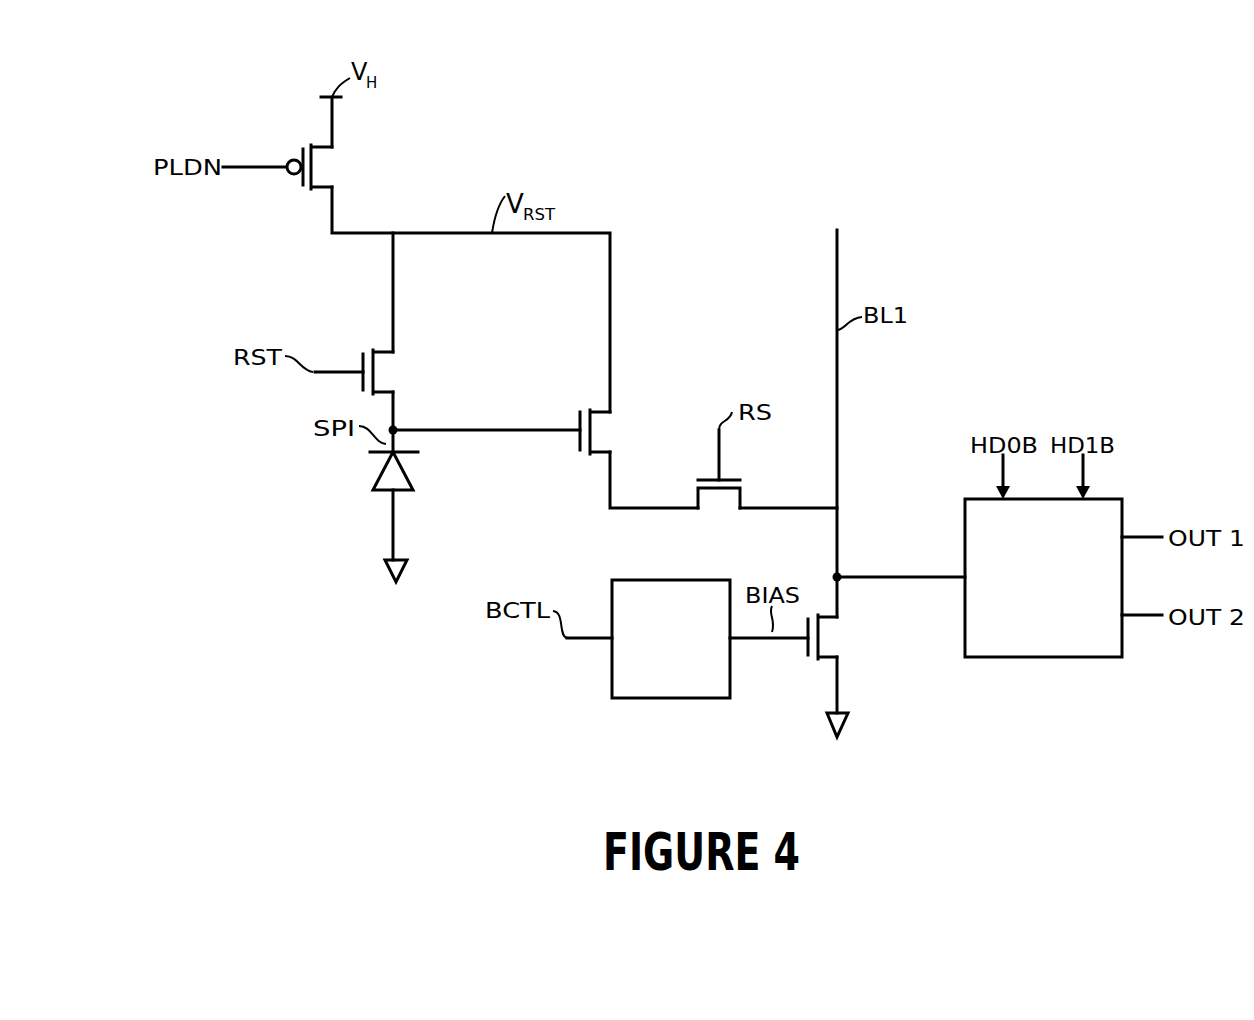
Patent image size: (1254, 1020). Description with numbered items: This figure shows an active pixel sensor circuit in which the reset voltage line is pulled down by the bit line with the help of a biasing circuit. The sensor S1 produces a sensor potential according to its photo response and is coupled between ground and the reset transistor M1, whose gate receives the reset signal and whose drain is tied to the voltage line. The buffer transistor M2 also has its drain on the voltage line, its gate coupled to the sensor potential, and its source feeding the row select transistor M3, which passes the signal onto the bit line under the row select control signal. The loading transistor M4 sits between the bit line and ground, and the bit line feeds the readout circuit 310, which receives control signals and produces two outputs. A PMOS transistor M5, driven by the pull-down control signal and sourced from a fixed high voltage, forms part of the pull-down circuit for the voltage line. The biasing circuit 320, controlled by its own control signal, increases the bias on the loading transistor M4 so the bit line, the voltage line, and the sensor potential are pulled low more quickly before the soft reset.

The readout circuit 310 is at (1063, 658).
The biasing circuit 320 is at (682, 700).
The reset transistor M1 is at (387, 372).
The buffer transistor M2 is at (600, 430).
The row select transistor M3 is at (718, 500).
The loading transistor M4 is at (828, 638).
The PMOS transistor M5 is at (332, 170).
The sensor S1 is at (410, 463).